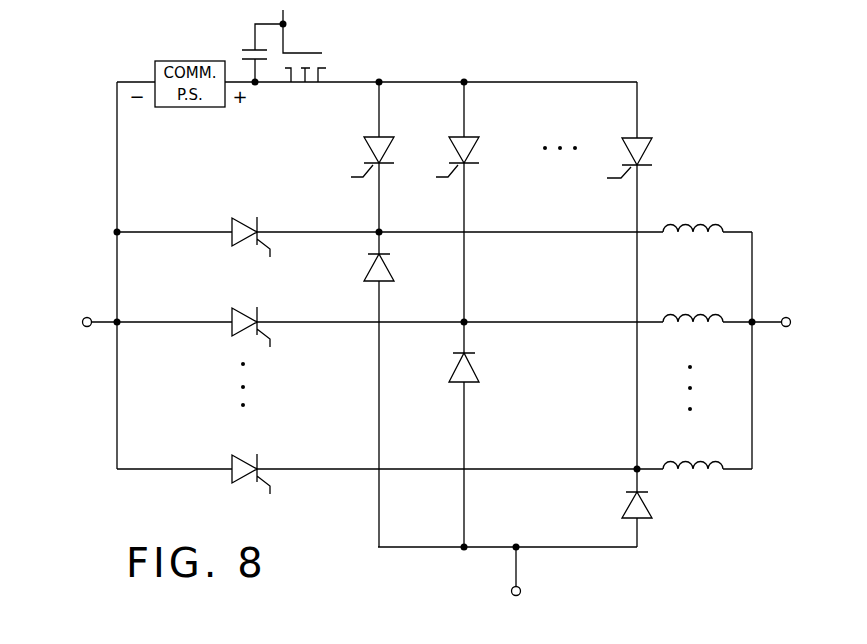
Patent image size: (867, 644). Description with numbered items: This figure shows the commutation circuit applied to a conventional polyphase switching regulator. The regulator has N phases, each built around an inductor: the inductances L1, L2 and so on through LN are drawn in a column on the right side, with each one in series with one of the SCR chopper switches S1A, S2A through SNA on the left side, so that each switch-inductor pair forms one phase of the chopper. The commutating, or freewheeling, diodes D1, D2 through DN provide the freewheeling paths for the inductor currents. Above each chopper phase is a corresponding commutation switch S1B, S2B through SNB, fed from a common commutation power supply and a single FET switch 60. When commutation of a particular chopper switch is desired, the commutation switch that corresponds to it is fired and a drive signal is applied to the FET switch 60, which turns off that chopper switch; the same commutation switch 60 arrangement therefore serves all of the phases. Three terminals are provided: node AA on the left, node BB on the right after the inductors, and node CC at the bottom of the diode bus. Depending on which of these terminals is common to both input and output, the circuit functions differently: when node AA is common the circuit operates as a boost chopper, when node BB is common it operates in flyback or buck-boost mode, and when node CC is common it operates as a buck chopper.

The FET switch 60 is at (303, 87).
The SCR chopper switch S1A is at (250, 226).
The SCR chopper switch S2A is at (250, 316).
The SCR chopper switch SNA is at (250, 463).
The commutation switch S1B is at (384, 163).
The commutation switch S2B is at (470, 163).
The commutation switch SNB is at (644, 164).
The commutating diode D1 is at (394, 269).
The commutating diode D2 is at (478, 369).
The commutating diode DN is at (652, 508).
The inductor L1 is at (693, 217).
The inductor L2 is at (693, 306).
The inductor LN is at (693, 453).
The node AA is at (72, 322).
The node BB is at (800, 322).
The node CC is at (517, 583).